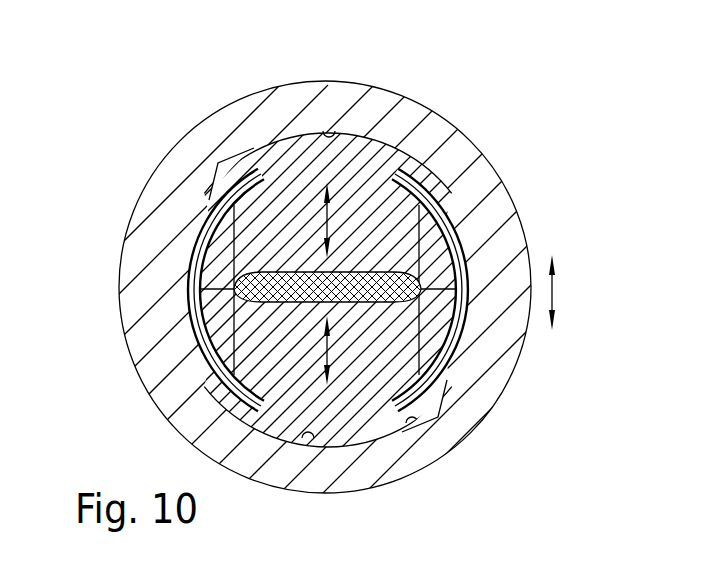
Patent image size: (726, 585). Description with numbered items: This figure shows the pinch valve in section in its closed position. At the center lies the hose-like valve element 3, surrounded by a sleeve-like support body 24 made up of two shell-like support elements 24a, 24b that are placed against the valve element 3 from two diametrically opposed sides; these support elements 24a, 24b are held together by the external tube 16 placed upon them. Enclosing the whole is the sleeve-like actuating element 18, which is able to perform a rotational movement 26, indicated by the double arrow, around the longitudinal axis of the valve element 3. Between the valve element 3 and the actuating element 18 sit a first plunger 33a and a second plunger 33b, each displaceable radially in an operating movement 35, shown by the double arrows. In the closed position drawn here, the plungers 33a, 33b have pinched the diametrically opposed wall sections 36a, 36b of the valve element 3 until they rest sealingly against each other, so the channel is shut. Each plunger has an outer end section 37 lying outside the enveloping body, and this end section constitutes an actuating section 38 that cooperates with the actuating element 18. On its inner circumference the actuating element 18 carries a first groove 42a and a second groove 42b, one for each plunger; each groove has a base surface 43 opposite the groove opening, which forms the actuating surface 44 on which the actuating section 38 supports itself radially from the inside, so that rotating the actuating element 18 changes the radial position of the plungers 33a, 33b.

The actuating element 18 is at (465, 152).
The valve element 3 is at (332, 288).
The external tube 16 is at (205, 286).
The support body 24 is at (250, 290).
The support element 24a is at (212, 247).
The support element 24b is at (208, 313).
The rotational movement 26 is at (558, 290).
The first plunger 33a is at (397, 122).
The second plunger 33b is at (274, 392).
The operating movement 35 is at (330, 212).
The wall section 36a is at (305, 270).
The wall section 36b is at (298, 306).
The outer end section 37 is at (327, 285).
The actuating section 38 is at (327, 417).
The first groove 42a is at (252, 150).
The second groove 42b is at (415, 416).
The base surface 43 is at (352, 290).
The actuating surface 44 is at (360, 427).